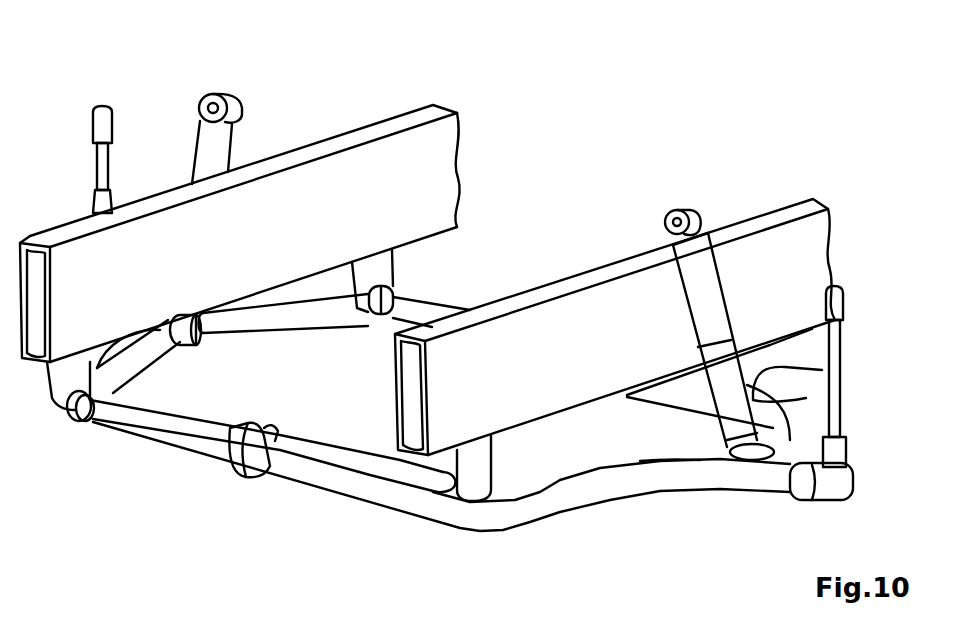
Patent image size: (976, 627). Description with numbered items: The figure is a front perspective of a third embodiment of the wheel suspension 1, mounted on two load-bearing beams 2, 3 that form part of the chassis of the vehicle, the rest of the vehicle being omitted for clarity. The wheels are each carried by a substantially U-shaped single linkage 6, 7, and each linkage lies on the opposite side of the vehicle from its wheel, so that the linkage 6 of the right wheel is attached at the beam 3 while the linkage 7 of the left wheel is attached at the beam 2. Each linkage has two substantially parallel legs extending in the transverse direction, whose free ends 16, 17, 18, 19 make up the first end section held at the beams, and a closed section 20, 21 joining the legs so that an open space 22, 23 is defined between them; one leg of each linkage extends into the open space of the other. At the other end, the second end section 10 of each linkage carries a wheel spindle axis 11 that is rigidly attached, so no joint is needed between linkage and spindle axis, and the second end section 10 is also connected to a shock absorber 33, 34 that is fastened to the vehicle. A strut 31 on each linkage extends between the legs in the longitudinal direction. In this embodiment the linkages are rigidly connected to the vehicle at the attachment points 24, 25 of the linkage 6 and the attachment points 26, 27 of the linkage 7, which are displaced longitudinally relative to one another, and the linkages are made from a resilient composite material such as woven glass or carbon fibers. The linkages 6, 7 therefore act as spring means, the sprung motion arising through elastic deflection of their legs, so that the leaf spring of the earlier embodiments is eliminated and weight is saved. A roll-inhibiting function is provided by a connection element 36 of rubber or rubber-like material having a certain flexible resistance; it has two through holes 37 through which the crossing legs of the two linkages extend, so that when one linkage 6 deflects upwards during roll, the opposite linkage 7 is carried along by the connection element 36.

The wheel suspension 1 is at (118, 58).
The load-bearing beam 2 is at (384, 128).
The load-bearing beam 3 is at (791, 214).
The linkage 6 is at (110, 436).
The linkage 7 is at (587, 493).
The second end section 10 is at (238, 334).
The wheel spindle axis 11 is at (100, 168).
The free end 16 is at (812, 328).
The free end 17 is at (439, 490).
The free end 18 is at (393, 291).
The free end 19 is at (75, 412).
The closed section 20 is at (659, 496).
The closed section 21 is at (147, 372).
The open space 22 is at (281, 389).
The open space 23 is at (337, 399).
The attachment point 24 is at (793, 378).
The attachment point 25 is at (473, 502).
The attachment point 26 is at (366, 316).
The attachment point 27 is at (56, 405).
The strut 31 is at (172, 344).
The shock absorber 33 is at (695, 251).
The shock absorber 34 is at (206, 138).
The connection element 36 is at (241, 469).
The through hole 37 is at (268, 428).